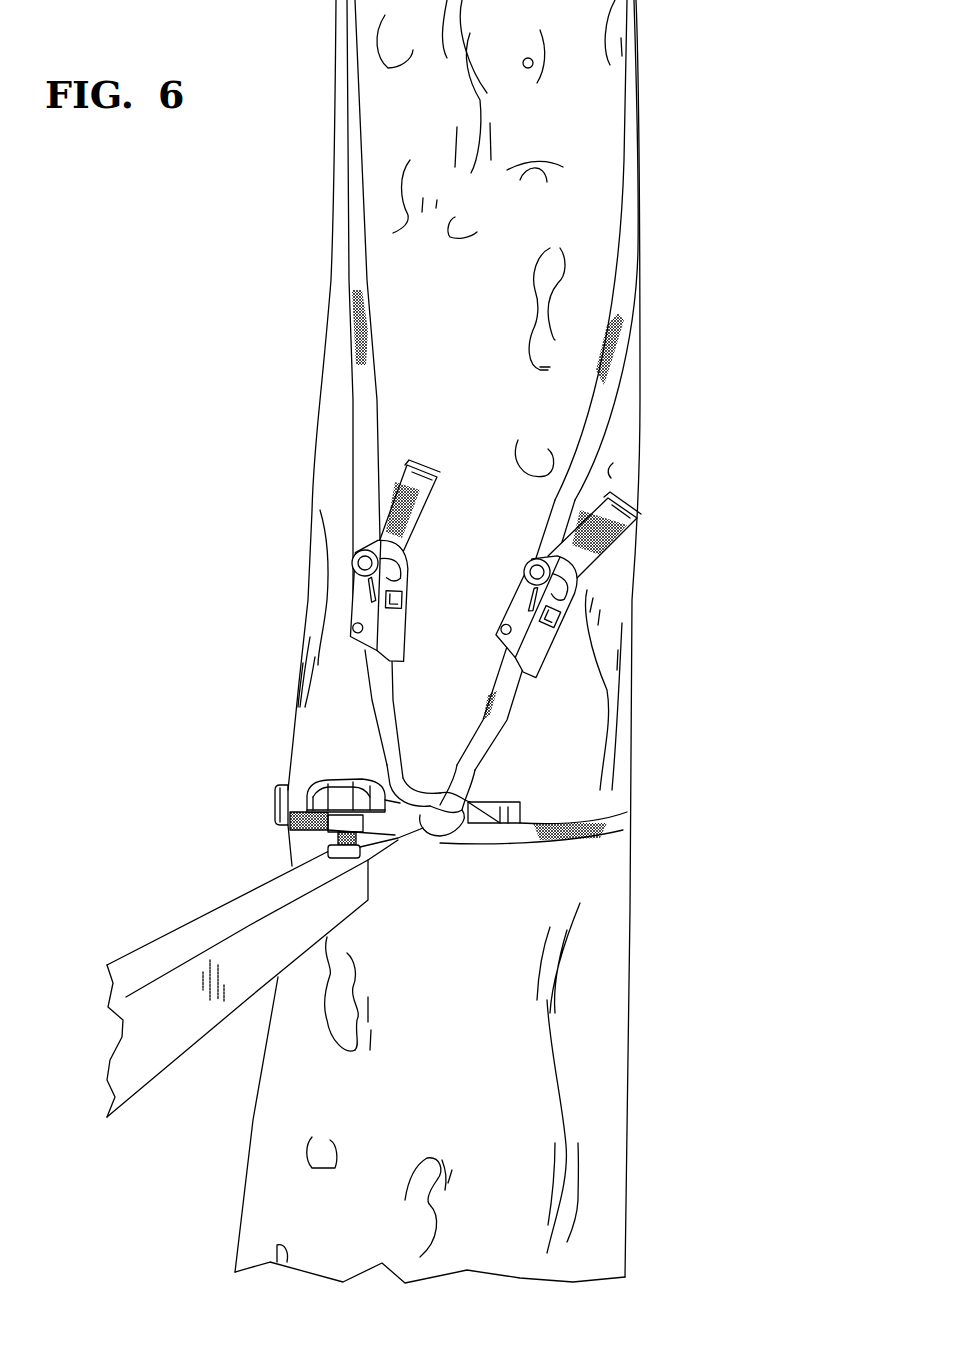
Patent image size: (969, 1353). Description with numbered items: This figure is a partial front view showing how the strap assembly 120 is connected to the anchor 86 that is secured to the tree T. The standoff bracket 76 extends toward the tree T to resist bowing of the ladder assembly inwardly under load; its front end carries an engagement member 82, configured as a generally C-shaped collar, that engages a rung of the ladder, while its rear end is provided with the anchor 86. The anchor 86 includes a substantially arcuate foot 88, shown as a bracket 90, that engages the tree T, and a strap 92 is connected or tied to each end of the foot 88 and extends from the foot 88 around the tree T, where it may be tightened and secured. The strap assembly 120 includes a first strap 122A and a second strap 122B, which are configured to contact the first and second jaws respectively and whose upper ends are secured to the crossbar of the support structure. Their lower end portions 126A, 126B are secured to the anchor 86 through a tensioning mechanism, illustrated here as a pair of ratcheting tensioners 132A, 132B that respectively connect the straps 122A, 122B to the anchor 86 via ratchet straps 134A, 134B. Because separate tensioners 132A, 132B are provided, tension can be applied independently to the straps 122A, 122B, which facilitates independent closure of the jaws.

The standoff bracket 76 is at (125, 918).
The engagement member 82 is at (510, 556).
The anchor 86 is at (432, 867).
The foot 88 is at (532, 812).
The bracket 90 is at (490, 798).
The strap 92 is at (614, 830).
The strap assembly 120 is at (618, 416).
The first strap 122A is at (622, 296).
The second strap 122B is at (357, 275).
The lower end portion of the first strap 126A is at (586, 509).
The lower end portion of the second strap 126B is at (346, 530).
The first ratcheting tensioner 132A is at (570, 650).
The second ratcheting tensioner 132B is at (343, 608).
The first ratchet strap 134A is at (478, 713).
The second ratchet strap 134B is at (385, 718).
The tree T is at (610, 752).